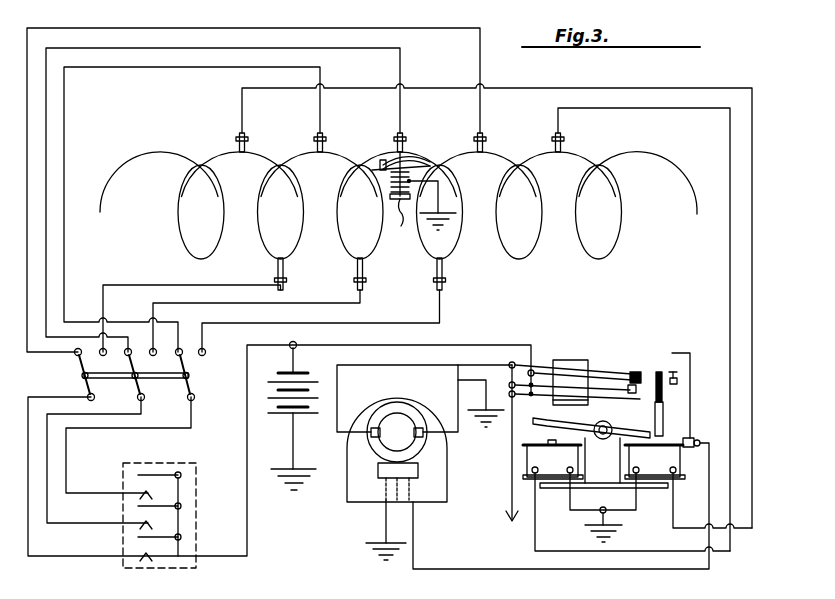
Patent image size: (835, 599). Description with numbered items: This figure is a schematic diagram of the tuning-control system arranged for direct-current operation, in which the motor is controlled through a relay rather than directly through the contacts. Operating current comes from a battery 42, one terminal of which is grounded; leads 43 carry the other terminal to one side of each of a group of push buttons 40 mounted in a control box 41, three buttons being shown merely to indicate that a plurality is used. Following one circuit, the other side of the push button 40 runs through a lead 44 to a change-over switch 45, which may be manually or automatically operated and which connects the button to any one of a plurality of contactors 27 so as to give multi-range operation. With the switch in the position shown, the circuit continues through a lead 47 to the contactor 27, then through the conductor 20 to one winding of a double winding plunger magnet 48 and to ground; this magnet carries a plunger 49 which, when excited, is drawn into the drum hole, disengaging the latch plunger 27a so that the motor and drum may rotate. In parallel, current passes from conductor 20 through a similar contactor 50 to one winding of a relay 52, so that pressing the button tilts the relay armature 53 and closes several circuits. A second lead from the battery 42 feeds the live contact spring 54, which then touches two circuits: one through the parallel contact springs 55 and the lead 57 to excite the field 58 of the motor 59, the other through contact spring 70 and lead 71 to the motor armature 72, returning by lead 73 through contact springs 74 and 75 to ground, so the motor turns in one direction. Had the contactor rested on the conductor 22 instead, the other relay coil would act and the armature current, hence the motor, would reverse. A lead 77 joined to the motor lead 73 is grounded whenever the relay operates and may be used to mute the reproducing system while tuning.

The conductor 20 is at (220, 243).
The conductor 22 is at (518, 256).
The contactor 27 is at (323, 150).
The latch plunger 27a is at (404, 148).
The push button 40 is at (158, 474).
The control box 41 is at (196, 503).
The battery 42 is at (284, 414).
The leads 43 is at (249, 540).
The lead 44 is at (66, 466).
The change-over switch 45 is at (188, 376).
The lead 47 is at (78, 258).
The double winding plunger magnet 48 is at (400, 226).
The plunger 49 is at (390, 180).
The contactor 50 is at (244, 150).
The relay 52 is at (640, 486).
The relay armature 53 is at (574, 389).
The live contact spring 54 is at (659, 371).
The contact springs 55 is at (700, 425).
The lead 57 is at (702, 572).
The field 58 is at (398, 505).
The motor 59 is at (447, 487).
The contact spring 70 is at (634, 371).
The lead 71 is at (458, 390).
The motor armature 72 is at (393, 420).
The lead 73 is at (478, 364).
The contact spring 74 is at (662, 398).
The contact spring 75 is at (636, 418).
The lead 77 is at (510, 452).